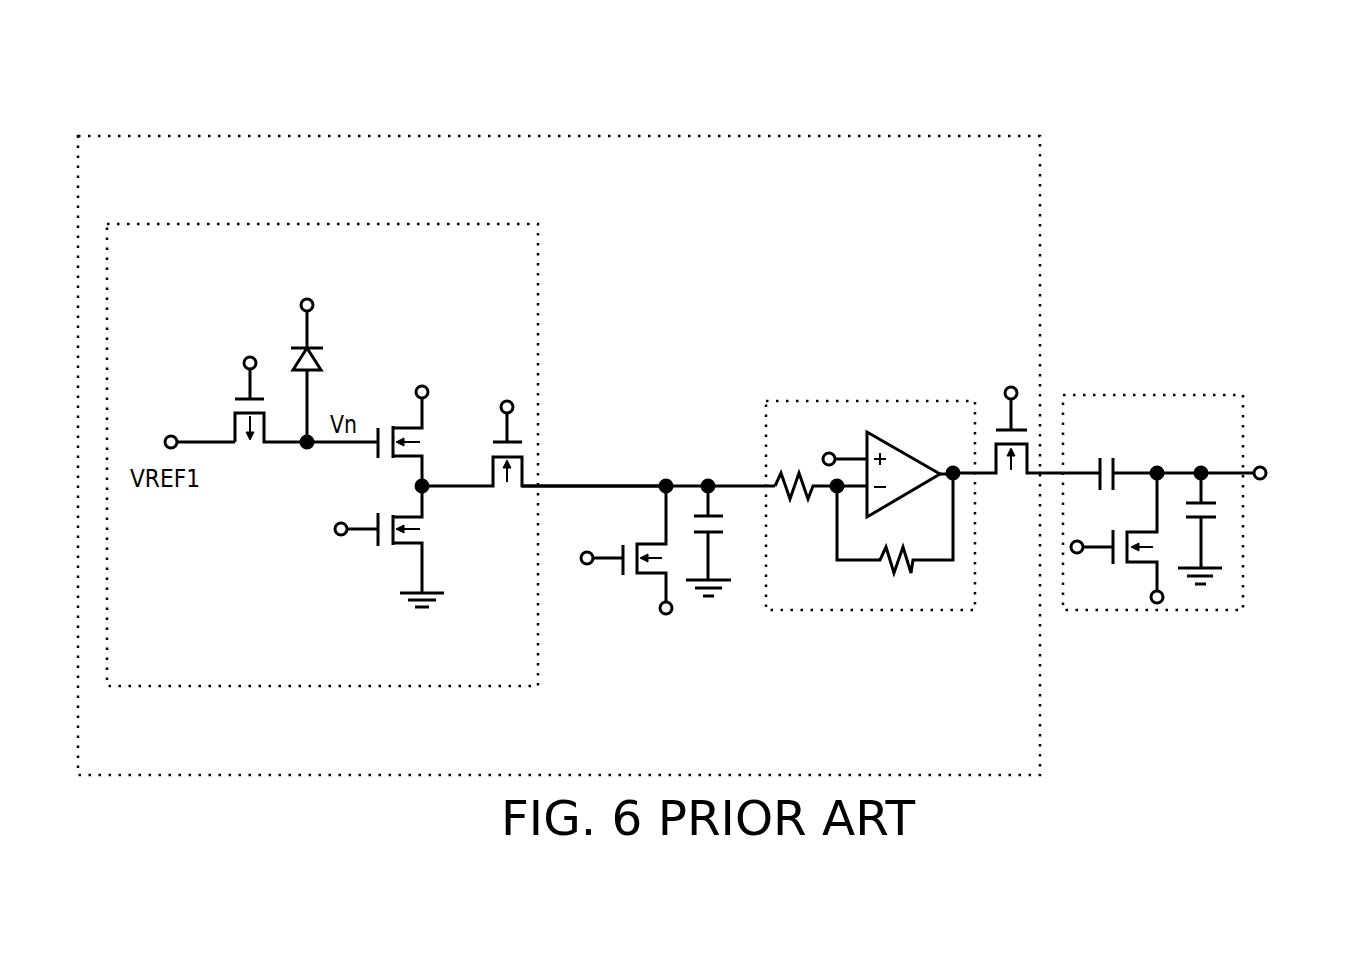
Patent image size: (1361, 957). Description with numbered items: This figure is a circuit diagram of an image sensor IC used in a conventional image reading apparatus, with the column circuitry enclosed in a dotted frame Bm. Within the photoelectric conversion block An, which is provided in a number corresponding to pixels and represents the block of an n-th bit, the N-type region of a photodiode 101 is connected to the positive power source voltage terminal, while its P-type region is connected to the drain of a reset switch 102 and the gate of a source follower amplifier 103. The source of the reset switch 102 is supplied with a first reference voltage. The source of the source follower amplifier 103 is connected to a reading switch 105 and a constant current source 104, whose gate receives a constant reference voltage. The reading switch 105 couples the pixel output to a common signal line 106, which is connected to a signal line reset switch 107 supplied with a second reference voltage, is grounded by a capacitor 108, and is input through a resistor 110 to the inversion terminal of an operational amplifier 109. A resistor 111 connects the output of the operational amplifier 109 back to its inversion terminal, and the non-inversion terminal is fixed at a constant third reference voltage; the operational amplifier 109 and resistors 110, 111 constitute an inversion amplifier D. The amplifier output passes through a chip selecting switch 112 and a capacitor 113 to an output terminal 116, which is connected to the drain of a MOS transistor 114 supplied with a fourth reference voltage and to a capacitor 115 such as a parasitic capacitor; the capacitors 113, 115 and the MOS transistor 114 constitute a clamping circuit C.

The photodiode 101 is at (320, 365).
The reset switch 102 is at (227, 423).
The source follower amplifier 103 is at (385, 457).
The constant current source 104 is at (393, 548).
The reading switch 105 is at (517, 493).
The common signal line 106 is at (643, 475).
The signal line reset switch 107 is at (643, 582).
The capacitor 108 is at (720, 540).
The operational amplifier 109 is at (893, 445).
The resistor 110 is at (780, 508).
The resistor 111 is at (918, 573).
The chip selecting switch 112 is at (1000, 420).
The capacitor 113 is at (1137, 457).
The MOS transistor 114 is at (1127, 568).
The capacitor 115 is at (1212, 527).
The output terminal 116 is at (1258, 462).
The photoelectric conversion block An is at (400, 224).
The column circuit block Bm is at (728, 136).
The inversion amplifier D is at (807, 401).
The clamping circuit C is at (1090, 395).